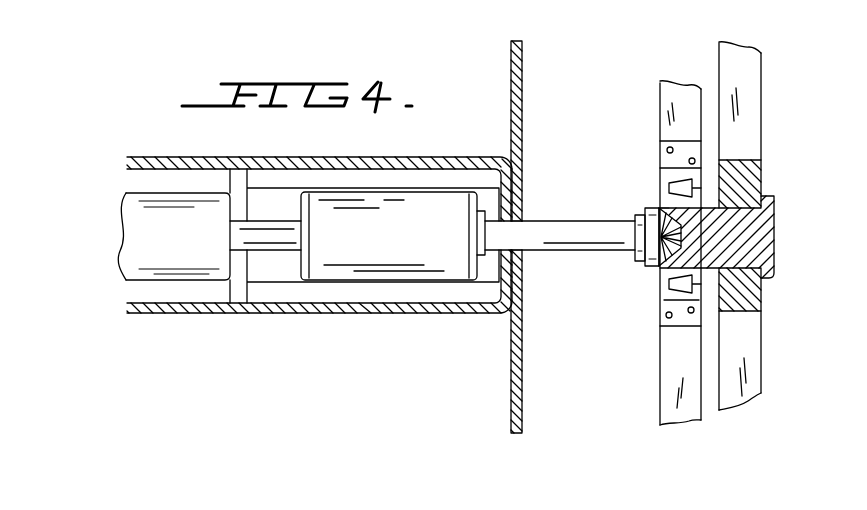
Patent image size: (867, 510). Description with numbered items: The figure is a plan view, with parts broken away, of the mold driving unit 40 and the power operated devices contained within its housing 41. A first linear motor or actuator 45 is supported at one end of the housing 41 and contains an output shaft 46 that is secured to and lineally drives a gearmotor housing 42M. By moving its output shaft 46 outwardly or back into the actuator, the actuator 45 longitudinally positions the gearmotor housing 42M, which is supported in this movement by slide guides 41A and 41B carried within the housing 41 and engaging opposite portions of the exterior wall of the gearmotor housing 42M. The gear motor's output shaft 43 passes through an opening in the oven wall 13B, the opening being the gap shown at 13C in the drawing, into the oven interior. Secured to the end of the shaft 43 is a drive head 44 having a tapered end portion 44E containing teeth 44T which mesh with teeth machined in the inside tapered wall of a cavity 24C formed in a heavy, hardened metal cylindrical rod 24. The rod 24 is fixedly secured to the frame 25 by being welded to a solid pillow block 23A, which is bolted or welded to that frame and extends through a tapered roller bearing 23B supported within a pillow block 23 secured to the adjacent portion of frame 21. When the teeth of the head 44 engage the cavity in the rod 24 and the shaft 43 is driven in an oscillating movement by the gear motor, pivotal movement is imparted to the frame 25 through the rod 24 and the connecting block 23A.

The mold driving unit 40 is at (205, 355).
The housing 41 is at (319, 228).
The slide guide 41A is at (395, 173).
The slide guide 41B is at (400, 290).
The gearmotor housing 42M is at (420, 230).
The output shaft 43 is at (577, 248).
The drive head 44 is at (643, 267).
The teeth 44T is at (663, 230).
The tapered end portion 44E is at (655, 266).
The first linear motor or actuator 45 is at (180, 240).
The output shaft 46 is at (277, 249).
The wall 13B is at (520, 66).
The panel opening 13C is at (522, 215).
The frame 21 is at (672, 373).
The pillow block 23 is at (675, 137).
The solid pillow block 23A is at (742, 177).
The tapered roller bearing 23B is at (664, 177).
The cylindrical rod 24 is at (772, 236).
The cavity 24C is at (652, 200).
The frame 25 is at (745, 110).